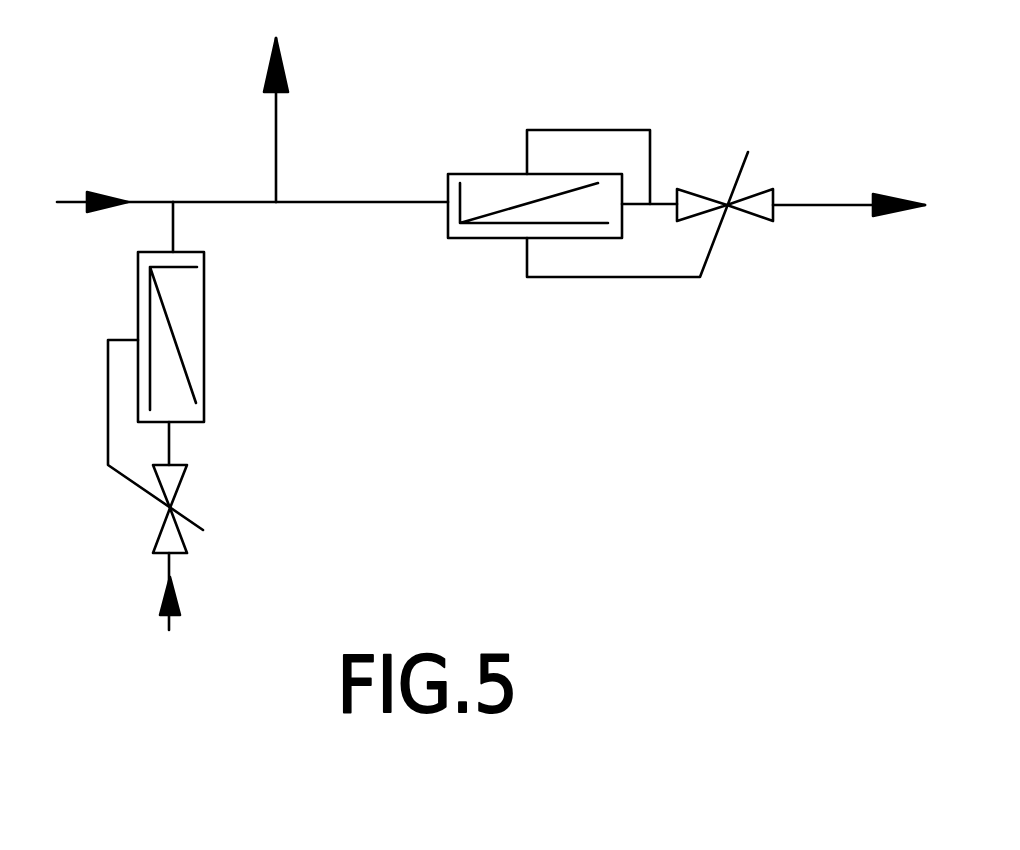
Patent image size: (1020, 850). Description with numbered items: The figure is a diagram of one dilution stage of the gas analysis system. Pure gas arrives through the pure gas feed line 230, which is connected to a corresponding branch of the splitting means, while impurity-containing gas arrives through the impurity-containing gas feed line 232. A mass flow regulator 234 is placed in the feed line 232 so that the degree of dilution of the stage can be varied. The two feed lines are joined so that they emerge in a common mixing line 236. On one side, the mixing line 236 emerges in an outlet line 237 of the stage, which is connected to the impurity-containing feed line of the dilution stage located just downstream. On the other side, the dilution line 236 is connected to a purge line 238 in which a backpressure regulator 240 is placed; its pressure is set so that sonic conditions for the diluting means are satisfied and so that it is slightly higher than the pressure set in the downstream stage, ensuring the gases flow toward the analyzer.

The pure gas feed line 230 is at (63, 197).
The impurity-containing gas feed line 232 is at (170, 565).
The mass flow regulator 234 is at (204, 367).
The common mixing line 236 is at (237, 202).
The outlet line 237 is at (276, 158).
The purge line 238 is at (373, 202).
The backpressure regulator 240 is at (475, 174).